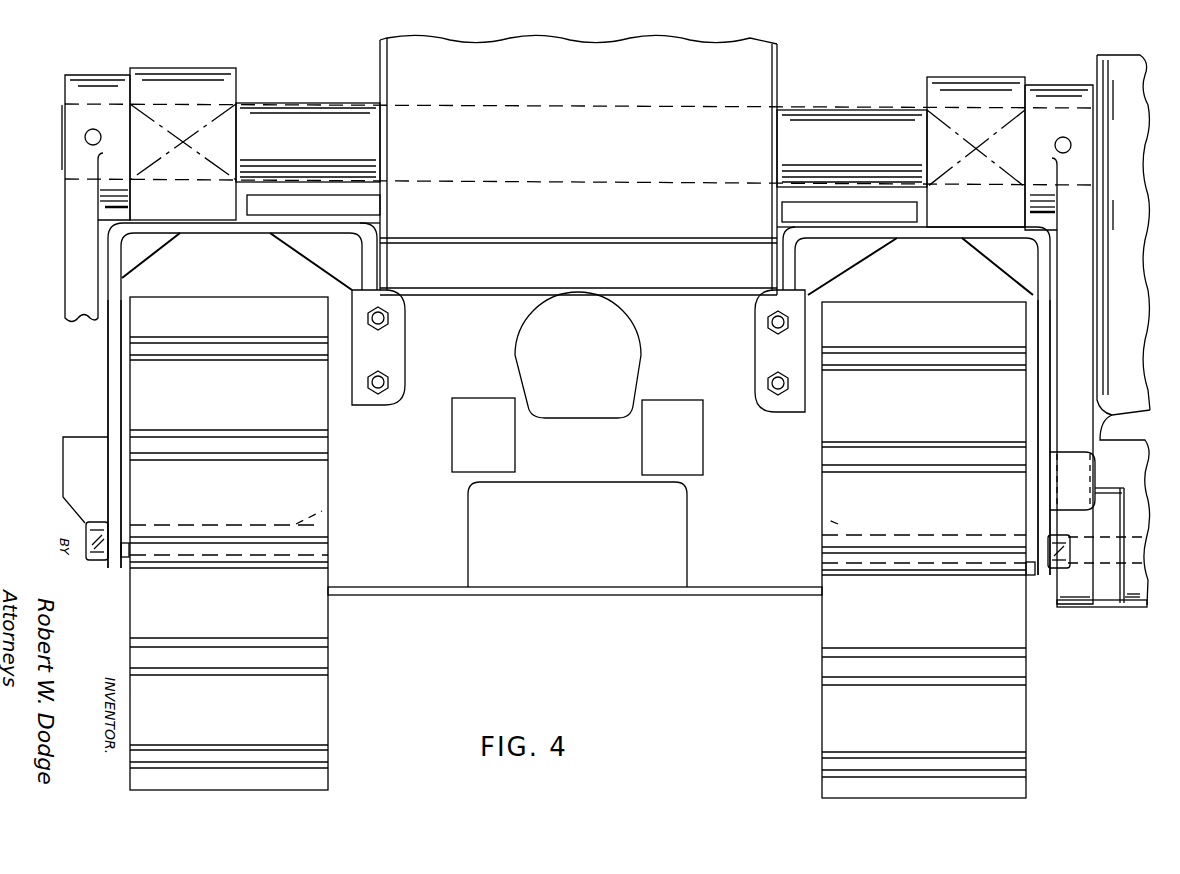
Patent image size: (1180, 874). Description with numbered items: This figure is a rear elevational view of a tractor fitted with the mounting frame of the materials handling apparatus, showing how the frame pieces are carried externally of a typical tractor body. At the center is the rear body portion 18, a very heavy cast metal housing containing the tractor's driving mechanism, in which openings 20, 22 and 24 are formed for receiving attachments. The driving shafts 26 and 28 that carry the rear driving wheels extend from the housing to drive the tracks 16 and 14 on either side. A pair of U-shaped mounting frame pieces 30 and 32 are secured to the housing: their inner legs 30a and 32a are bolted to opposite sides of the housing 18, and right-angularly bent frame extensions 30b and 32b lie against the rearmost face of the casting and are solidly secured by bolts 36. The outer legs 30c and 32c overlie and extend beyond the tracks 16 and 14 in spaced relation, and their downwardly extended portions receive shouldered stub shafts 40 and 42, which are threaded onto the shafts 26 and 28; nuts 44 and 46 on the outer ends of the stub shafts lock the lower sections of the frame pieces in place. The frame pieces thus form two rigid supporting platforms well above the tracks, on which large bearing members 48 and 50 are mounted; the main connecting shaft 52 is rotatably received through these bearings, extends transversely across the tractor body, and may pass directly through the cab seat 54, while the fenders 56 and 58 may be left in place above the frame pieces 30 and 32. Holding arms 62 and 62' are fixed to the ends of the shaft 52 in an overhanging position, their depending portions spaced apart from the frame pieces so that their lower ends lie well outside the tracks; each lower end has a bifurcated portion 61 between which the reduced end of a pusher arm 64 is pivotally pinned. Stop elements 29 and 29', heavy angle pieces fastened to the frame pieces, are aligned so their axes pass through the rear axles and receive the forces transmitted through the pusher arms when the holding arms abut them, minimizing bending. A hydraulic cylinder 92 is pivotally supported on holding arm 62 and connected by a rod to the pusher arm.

The track 14 is at (1012, 748).
The track 16 is at (310, 662).
The rear body portion 18 is at (742, 588).
The opening 20 is at (680, 546).
The opening 22 is at (692, 460).
The opening 24 is at (640, 356).
The driving shaft 26 is at (328, 514).
The driving shaft 28 is at (825, 520).
The stop element 29 is at (1091, 481).
The stop element 29' is at (60, 480).
The mounting frame piece 30 is at (232, 225).
The inner leg 30a is at (375, 258).
The frame extension 30b is at (396, 350).
The outer leg 30c is at (115, 349).
The mounting frame piece 32 is at (922, 225).
The inner leg 32a is at (775, 258).
The frame extension 32b is at (762, 352).
The outer leg 32c is at (1047, 402).
The bolts 36 is at (384, 318).
The stub shaft 40 is at (124, 560).
The stub shaft 42 is at (1030, 576).
The nut 44 is at (96, 562).
The nut 46 is at (1055, 536).
The bearing member 48 is at (236, 85).
The bearing member 50 is at (948, 85).
The main connecting shaft 52 is at (836, 110).
The cab seat 54 is at (775, 70).
The fender 56 is at (382, 202).
The fender 58 is at (775, 205).
The bifurcated portion 61 is at (1078, 608).
The holding arm 62 is at (1059, 327).
The holding arm 62' is at (69, 198).
The pusher arm 64 is at (1104, 612).
The hydraulic cylinder 92 is at (1118, 398).